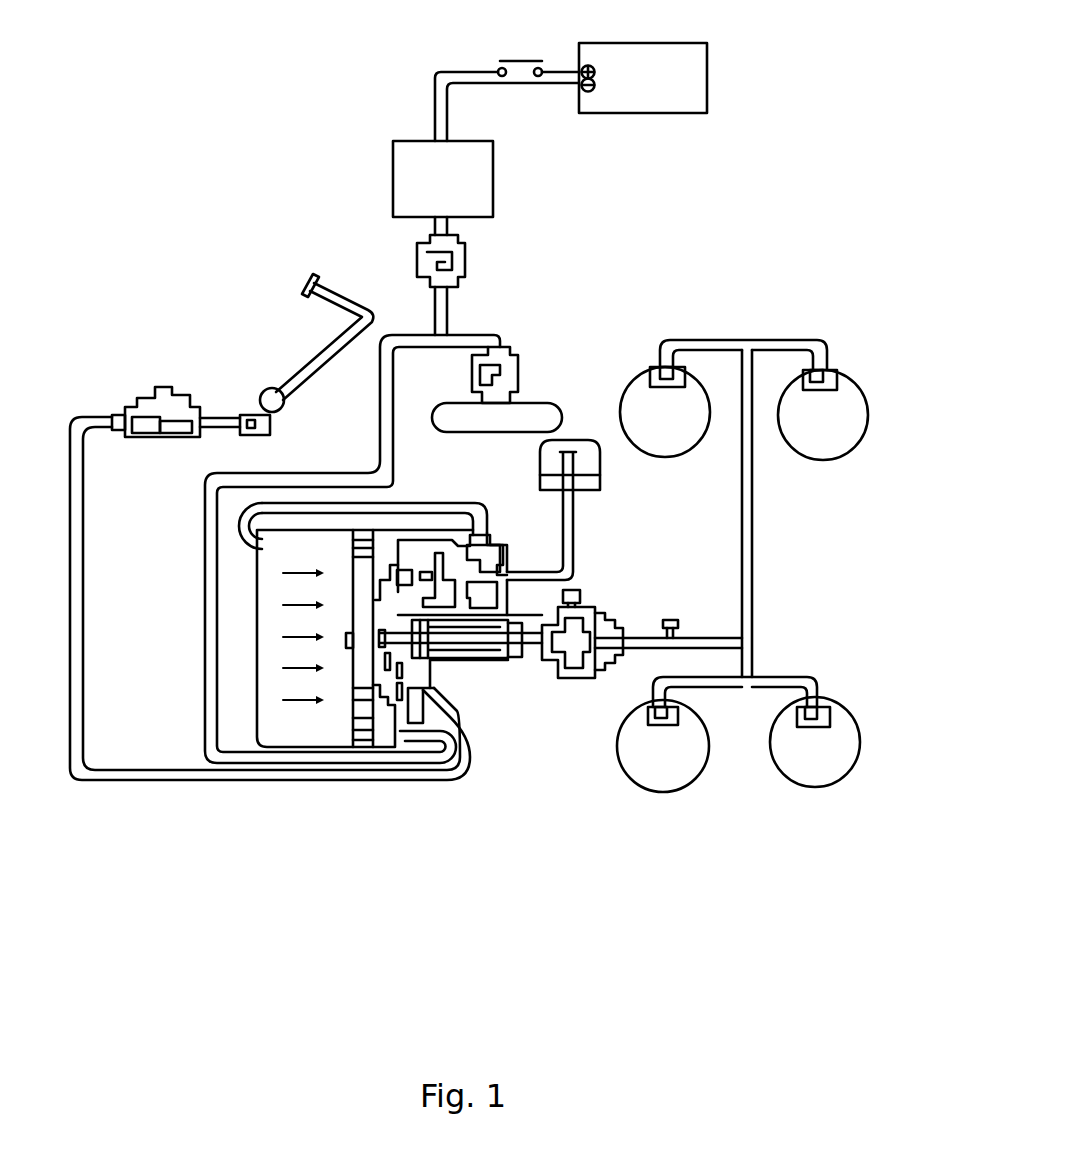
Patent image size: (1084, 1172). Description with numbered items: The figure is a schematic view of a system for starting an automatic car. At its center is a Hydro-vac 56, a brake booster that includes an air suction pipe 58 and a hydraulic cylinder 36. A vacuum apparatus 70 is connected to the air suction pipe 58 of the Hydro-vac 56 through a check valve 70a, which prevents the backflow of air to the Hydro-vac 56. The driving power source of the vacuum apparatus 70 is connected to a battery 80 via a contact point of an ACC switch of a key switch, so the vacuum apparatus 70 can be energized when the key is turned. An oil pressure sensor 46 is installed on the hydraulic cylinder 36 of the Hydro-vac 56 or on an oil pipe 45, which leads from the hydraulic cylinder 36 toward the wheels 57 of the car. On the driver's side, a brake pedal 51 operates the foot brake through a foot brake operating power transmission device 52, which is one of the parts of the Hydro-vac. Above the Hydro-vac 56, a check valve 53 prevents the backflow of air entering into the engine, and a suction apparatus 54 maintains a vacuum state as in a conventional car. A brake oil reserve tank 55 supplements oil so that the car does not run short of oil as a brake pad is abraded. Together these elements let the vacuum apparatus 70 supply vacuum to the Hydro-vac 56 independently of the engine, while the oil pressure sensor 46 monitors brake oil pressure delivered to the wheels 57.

The battery 80 is at (707, 80).
The vacuum apparatus 70 is at (393, 180).
The check valve 70a is at (467, 257).
The air suction pipe 58 is at (477, 335).
The check valve 53 is at (518, 370).
The suction apparatus 54 is at (500, 432).
The brake oil reserve tank 55 is at (600, 475).
The foot brake operating power transmission device 52 is at (148, 390).
The brake pedal 51 is at (323, 300).
The Hydro-vac 56 is at (463, 690).
The hydraulic cylinder 36 is at (562, 678).
The oil pressure sensor 46 is at (663, 620).
The oil pipe 45 is at (703, 637).
The wheels 57 is at (860, 740).